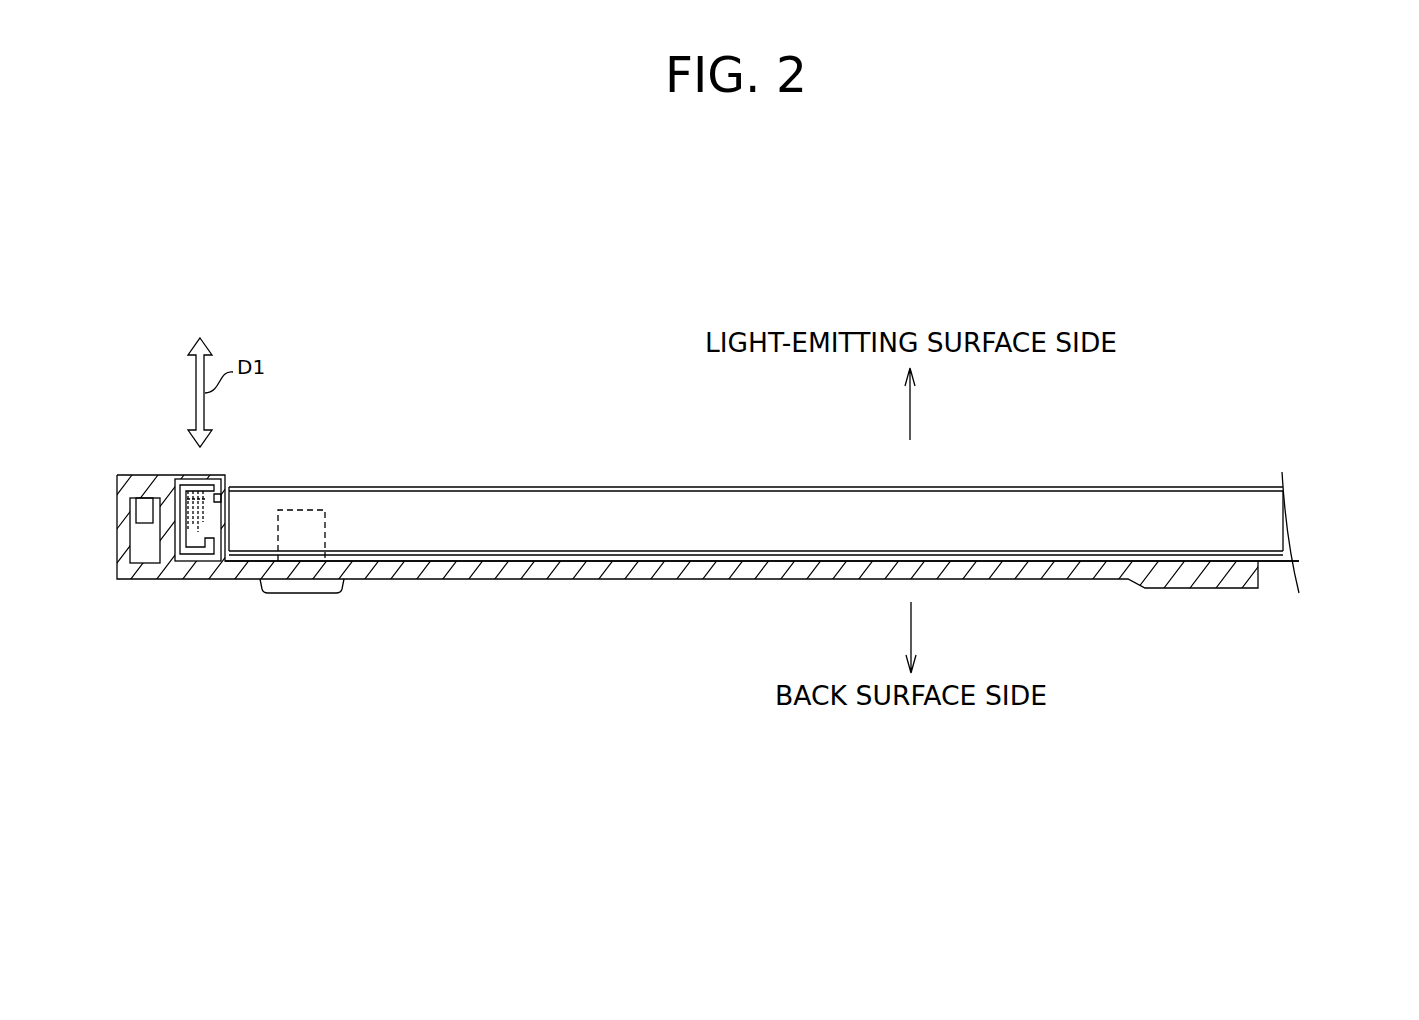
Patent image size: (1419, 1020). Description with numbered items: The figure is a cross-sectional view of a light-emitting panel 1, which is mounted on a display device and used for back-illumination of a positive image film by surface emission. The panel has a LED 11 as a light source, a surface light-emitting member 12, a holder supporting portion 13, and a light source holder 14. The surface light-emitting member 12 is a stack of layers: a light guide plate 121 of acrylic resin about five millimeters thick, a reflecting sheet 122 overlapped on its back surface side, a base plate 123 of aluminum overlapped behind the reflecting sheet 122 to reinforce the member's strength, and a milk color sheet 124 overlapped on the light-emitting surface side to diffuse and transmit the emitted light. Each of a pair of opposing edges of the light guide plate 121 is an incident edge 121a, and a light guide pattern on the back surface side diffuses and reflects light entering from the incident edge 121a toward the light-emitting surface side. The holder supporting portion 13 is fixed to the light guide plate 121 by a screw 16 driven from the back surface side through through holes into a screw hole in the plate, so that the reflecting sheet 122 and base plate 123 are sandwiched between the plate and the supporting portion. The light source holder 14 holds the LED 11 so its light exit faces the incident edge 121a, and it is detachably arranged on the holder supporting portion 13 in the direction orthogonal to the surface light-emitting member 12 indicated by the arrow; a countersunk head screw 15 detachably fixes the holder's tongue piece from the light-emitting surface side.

The light-emitting panel 1 is at (127, 293).
The LED 11 is at (195, 537).
The surface light-emitting member 12 is at (1366, 477).
The light guide plate 121 is at (1270, 523).
The incident edge 121a is at (216, 493).
The reflecting sheet 122 is at (1283, 556).
The base plate 123 is at (1272, 562).
The milk color sheet 124 is at (1262, 487).
The holder supporting portion 13 is at (743, 580).
The light source holder 14 is at (180, 495).
The countersunk head screw 15 is at (143, 523).
The screw 16 is at (303, 593).